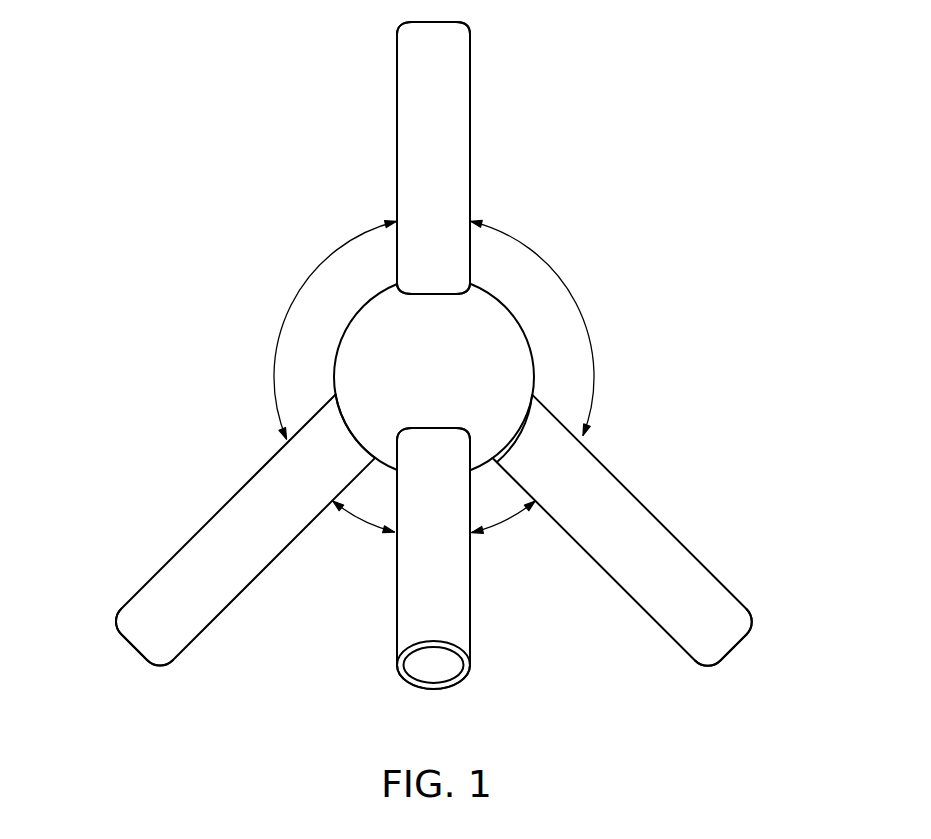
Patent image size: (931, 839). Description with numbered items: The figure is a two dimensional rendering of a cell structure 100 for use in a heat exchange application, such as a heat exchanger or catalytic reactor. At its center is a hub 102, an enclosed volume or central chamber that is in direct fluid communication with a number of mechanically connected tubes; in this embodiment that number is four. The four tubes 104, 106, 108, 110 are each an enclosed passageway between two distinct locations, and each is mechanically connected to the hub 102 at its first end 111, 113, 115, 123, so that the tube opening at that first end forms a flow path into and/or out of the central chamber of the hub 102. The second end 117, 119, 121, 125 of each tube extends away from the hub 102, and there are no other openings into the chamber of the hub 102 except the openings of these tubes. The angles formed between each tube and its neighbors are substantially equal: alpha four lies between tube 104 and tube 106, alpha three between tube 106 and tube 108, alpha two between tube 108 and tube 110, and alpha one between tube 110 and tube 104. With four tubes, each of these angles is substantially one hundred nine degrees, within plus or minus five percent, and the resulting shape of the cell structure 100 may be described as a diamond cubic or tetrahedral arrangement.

The cell structure 100 is at (178, 170).
The hub 102 is at (528, 334).
The tube 104 is at (470, 165).
The tube 106 is at (653, 510).
The tube 108 is at (470, 607).
The tube 110 is at (233, 598).
The first end 111 is at (470, 281).
The first end 113 is at (536, 398).
The first end 115 is at (436, 428).
The second end 117 is at (470, 33).
The second end 119 is at (750, 633).
The second end 121 is at (463, 665).
The first end 123 is at (330, 397).
The second end 125 is at (118, 617).